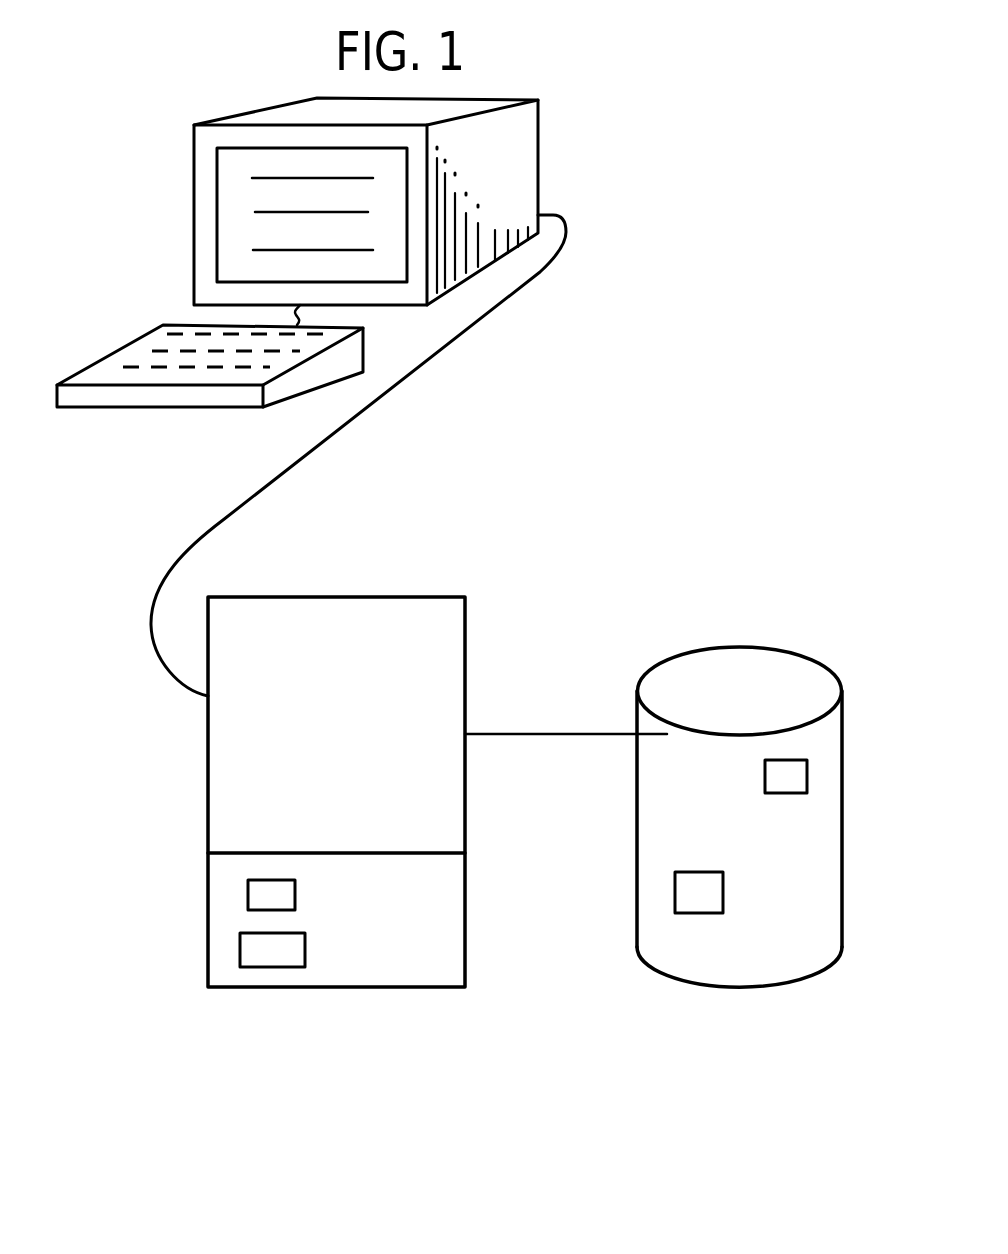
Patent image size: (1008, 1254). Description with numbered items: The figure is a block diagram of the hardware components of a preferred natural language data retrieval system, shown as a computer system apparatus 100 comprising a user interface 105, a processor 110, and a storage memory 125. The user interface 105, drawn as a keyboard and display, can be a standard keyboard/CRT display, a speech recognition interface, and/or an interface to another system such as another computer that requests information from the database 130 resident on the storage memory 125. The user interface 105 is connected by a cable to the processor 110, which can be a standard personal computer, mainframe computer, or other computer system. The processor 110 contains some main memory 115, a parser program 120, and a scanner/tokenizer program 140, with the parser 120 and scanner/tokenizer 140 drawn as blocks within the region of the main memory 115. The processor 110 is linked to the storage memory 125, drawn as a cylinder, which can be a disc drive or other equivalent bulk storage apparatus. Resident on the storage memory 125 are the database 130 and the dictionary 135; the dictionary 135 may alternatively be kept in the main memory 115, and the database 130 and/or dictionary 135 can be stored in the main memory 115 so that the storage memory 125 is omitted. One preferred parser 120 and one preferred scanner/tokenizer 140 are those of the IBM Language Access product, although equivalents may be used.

The computer system apparatus 100 is at (763, 230).
The user interface 105 is at (248, 118).
The processor 110 is at (469, 673).
The main memory 115 is at (408, 947).
The parser program 120 is at (260, 893).
The storage memory 125 is at (790, 960).
The database 130 is at (697, 902).
The dictionary 135 is at (797, 778).
The scanner/tokenizer program 140 is at (275, 957).